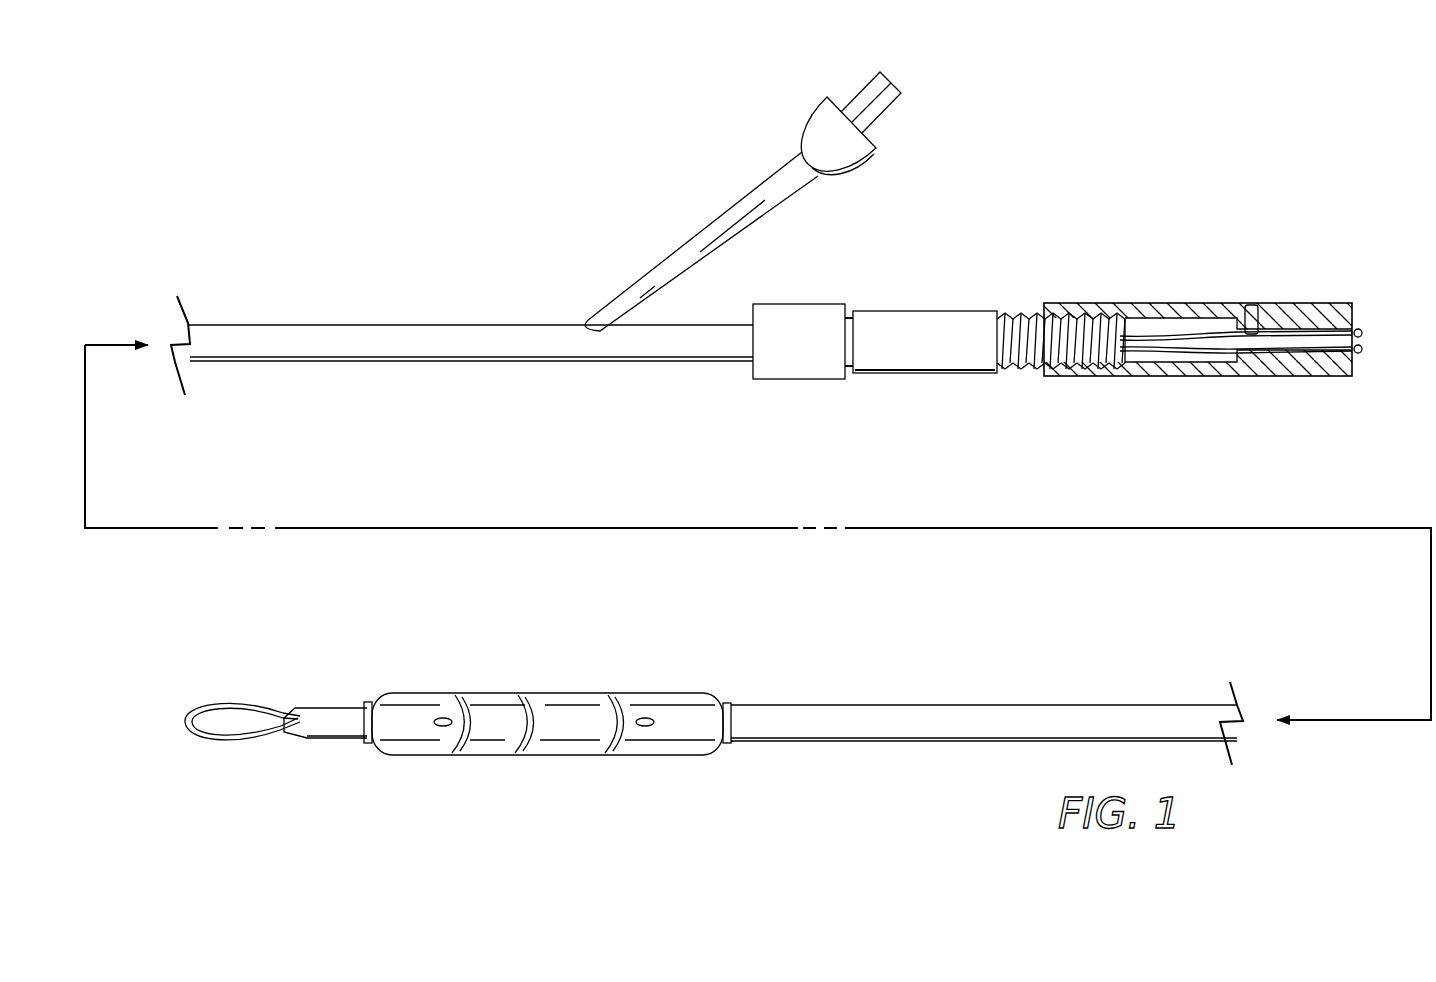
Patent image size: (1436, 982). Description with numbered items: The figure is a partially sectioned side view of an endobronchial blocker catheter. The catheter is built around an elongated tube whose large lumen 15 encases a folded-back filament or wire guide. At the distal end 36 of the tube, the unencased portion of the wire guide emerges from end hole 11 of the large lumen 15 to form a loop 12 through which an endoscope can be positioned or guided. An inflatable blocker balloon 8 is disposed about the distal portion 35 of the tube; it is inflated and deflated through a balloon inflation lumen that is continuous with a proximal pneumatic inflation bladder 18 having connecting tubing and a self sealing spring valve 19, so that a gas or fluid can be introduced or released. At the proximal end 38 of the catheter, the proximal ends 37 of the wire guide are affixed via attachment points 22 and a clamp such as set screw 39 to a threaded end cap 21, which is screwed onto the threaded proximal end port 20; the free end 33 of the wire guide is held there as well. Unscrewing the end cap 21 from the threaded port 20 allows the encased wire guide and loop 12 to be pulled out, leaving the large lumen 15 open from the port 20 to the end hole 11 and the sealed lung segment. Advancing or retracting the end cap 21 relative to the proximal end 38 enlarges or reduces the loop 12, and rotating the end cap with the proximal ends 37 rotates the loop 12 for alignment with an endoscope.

The inflatable blocker balloon 8 is at (638, 697).
The end hole 11 is at (267, 740).
The loop 12 is at (214, 706).
The large lumen 15 is at (294, 740).
The pneumatic inflation bladder 18 is at (865, 163).
The self sealing spring valve 19 is at (902, 101).
The threaded proximal end port 20 is at (1150, 366).
The threaded end cap 21 is at (1304, 384).
The attachment points 22 is at (1364, 332).
The free end 33 is at (1291, 313).
The distal portion 35 is at (519, 682).
The distal end 36 is at (306, 700).
The proximal ends 37 is at (1272, 358).
The proximal end 38 is at (1068, 287).
The set screw 39 is at (1259, 310).